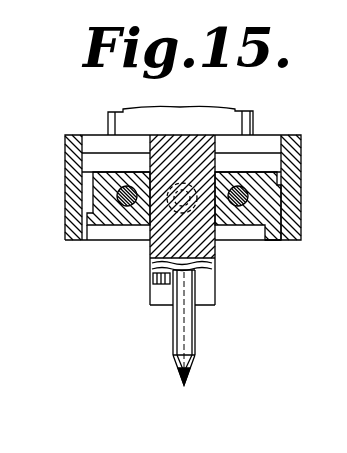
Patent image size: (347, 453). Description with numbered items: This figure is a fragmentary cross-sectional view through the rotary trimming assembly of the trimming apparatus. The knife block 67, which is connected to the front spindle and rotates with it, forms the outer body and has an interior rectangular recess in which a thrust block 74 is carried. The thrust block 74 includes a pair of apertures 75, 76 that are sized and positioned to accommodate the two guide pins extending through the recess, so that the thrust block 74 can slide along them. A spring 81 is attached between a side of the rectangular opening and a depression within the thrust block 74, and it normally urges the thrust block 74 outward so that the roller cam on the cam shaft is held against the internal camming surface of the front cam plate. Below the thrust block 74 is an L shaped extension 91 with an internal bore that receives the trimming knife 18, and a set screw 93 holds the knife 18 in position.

The knife block 67 is at (66, 241).
The thrust block 74 is at (269, 237).
The aperture 75 is at (132, 206).
The aperture 76 is at (245, 191).
The spring 81 is at (182, 220).
The L shaped extension 91 is at (214, 262).
The set screw 93 is at (153, 283).
The trimming knife 18 is at (196, 333).